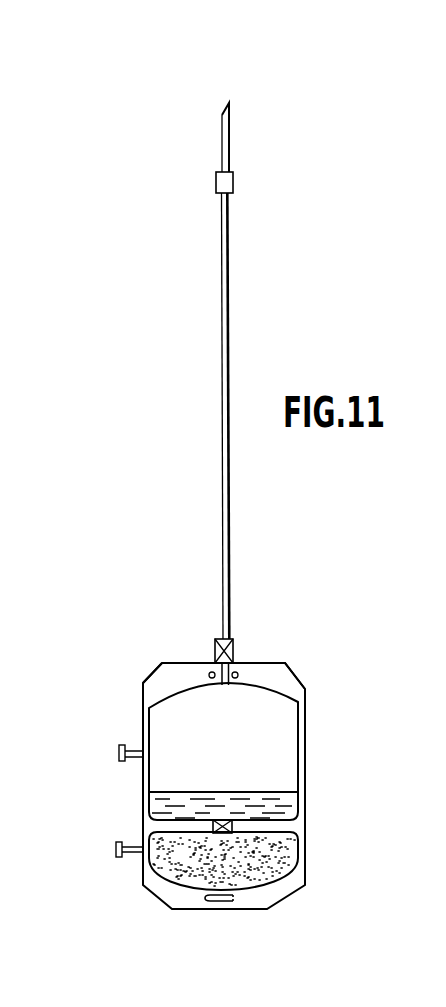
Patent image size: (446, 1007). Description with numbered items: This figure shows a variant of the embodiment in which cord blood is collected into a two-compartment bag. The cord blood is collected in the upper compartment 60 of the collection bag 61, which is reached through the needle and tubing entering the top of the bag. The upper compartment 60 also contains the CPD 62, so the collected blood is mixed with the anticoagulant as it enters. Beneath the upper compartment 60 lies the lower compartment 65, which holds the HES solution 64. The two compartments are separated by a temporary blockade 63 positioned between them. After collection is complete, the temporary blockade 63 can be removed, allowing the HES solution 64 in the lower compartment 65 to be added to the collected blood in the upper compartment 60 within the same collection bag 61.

The upper compartment 60 is at (283, 714).
The collection bag 61 is at (285, 667).
The CPD 62 is at (287, 812).
The temporary blockade 63 is at (221, 818).
The HES solution 64 is at (268, 870).
The lower compartment 65 is at (278, 835).